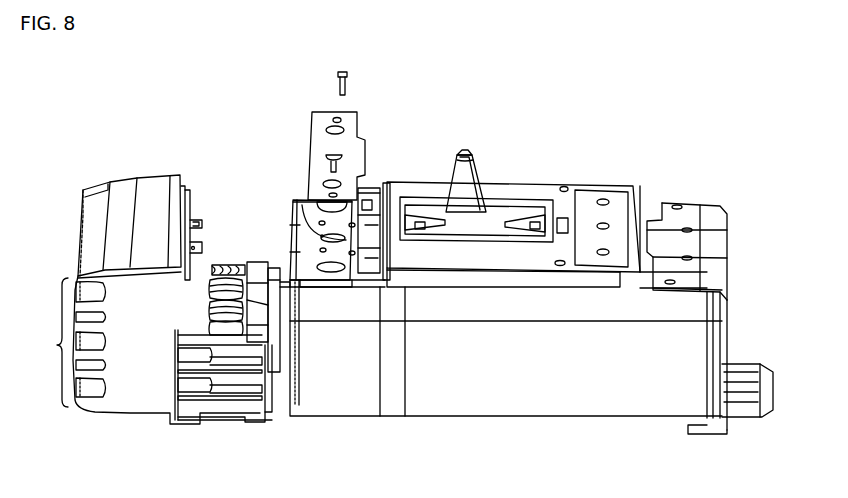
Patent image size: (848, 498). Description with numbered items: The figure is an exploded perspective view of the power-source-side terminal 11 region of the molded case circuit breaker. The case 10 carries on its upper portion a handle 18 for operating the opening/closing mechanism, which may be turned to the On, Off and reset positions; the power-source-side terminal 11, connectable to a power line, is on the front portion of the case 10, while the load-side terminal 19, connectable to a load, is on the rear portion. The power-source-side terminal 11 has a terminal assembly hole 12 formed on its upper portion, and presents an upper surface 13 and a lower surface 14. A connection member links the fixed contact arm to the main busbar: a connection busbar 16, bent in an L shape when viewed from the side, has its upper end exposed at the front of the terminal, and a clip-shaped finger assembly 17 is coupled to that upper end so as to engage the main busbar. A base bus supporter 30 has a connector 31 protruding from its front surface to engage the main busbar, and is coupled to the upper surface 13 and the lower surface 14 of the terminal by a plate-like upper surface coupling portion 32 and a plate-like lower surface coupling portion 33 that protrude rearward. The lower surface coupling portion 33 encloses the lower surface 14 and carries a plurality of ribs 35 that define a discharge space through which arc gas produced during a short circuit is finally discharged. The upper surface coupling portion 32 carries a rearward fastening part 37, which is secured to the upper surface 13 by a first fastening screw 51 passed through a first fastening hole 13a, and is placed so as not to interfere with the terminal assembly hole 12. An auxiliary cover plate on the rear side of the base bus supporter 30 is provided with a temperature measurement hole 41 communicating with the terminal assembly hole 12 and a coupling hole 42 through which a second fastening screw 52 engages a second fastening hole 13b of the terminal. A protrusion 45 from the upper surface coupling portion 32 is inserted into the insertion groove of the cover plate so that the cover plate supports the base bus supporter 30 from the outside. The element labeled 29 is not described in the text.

The case 10 is at (566, 190).
The power-source-side terminal 11 is at (315, 395).
The terminal assembly hole 12 is at (383, 212).
The upper surface 13 is at (332, 283).
The first fastening hole 13a is at (292, 232).
The second fastening hole 13b is at (330, 283).
The lower surface 14 is at (352, 416).
The connection busbar 16 is at (277, 374).
The finger assembly 17 is at (222, 263).
The handle 18 is at (478, 165).
The load-side terminal 19 is at (705, 336).
The connector 29 is at (772, 392).
The base bus supporter 30 is at (155, 180).
The connector 31 is at (146, 348).
The upper surface coupling portion 32 is at (187, 188).
The lower surface coupling portion 33 is at (250, 410).
The ribs 35 is at (222, 400).
The fastening part 37 is at (204, 220).
The temperature measurement hole 41 is at (345, 130).
The coupling hole 42 is at (342, 120).
The protrusion 45 is at (366, 175).
The first fastening screw 51 is at (301, 203).
The second fastening screw 52 is at (350, 80).